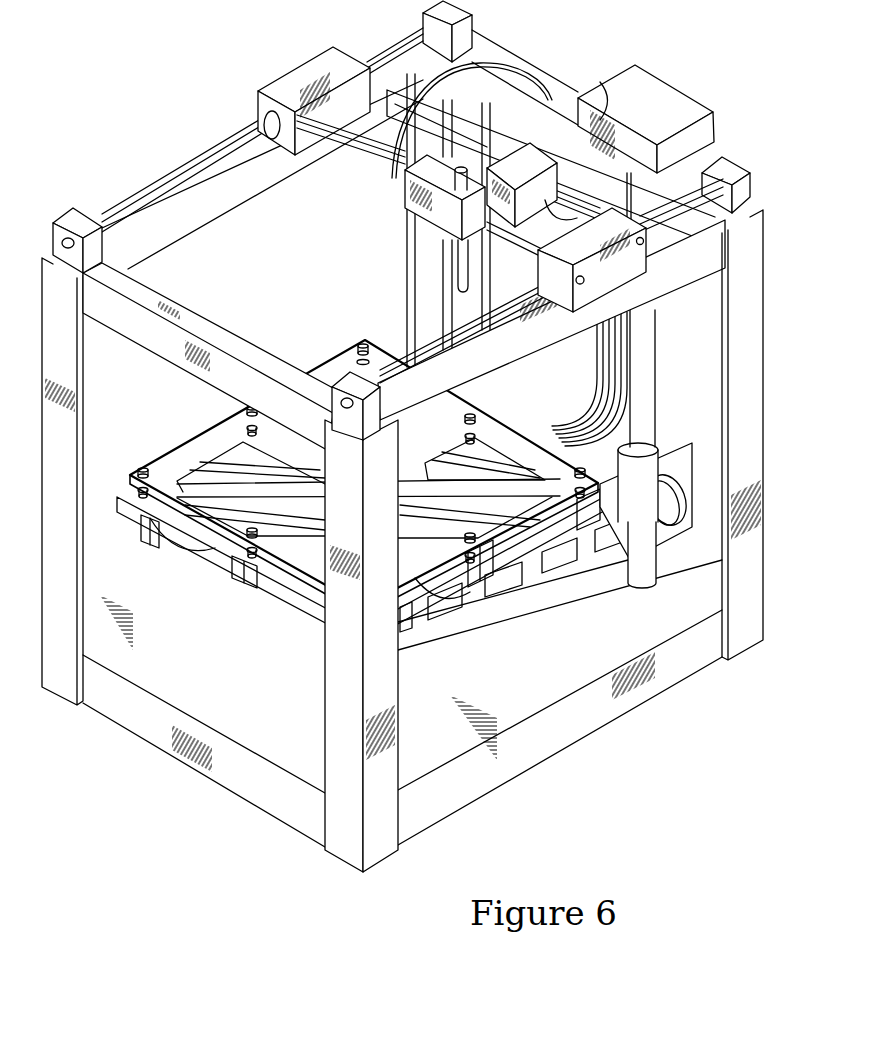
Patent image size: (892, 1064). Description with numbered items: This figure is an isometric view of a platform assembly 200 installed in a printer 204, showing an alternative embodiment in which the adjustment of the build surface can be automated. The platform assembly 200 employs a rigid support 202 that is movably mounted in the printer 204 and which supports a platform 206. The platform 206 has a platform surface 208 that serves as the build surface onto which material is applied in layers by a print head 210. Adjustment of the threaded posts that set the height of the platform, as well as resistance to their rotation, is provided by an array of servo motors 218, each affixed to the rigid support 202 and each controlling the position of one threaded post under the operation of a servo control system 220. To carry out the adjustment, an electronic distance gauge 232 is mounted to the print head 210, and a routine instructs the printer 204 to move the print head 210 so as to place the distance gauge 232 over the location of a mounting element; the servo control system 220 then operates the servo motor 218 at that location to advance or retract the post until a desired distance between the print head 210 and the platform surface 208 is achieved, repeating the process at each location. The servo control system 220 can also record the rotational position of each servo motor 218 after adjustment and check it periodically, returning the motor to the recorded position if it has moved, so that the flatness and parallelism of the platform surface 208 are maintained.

The platform assembly 200 is at (257, 613).
The rigid support 202 is at (508, 618).
The printer 204 is at (168, 97).
The platform 206 is at (302, 580).
The platform surface 208 is at (183, 452).
The print head 210 is at (533, 162).
The servo motors 218 is at (228, 563).
The servo control system 220 is at (667, 103).
The electronic distance gauge 232 is at (417, 197).